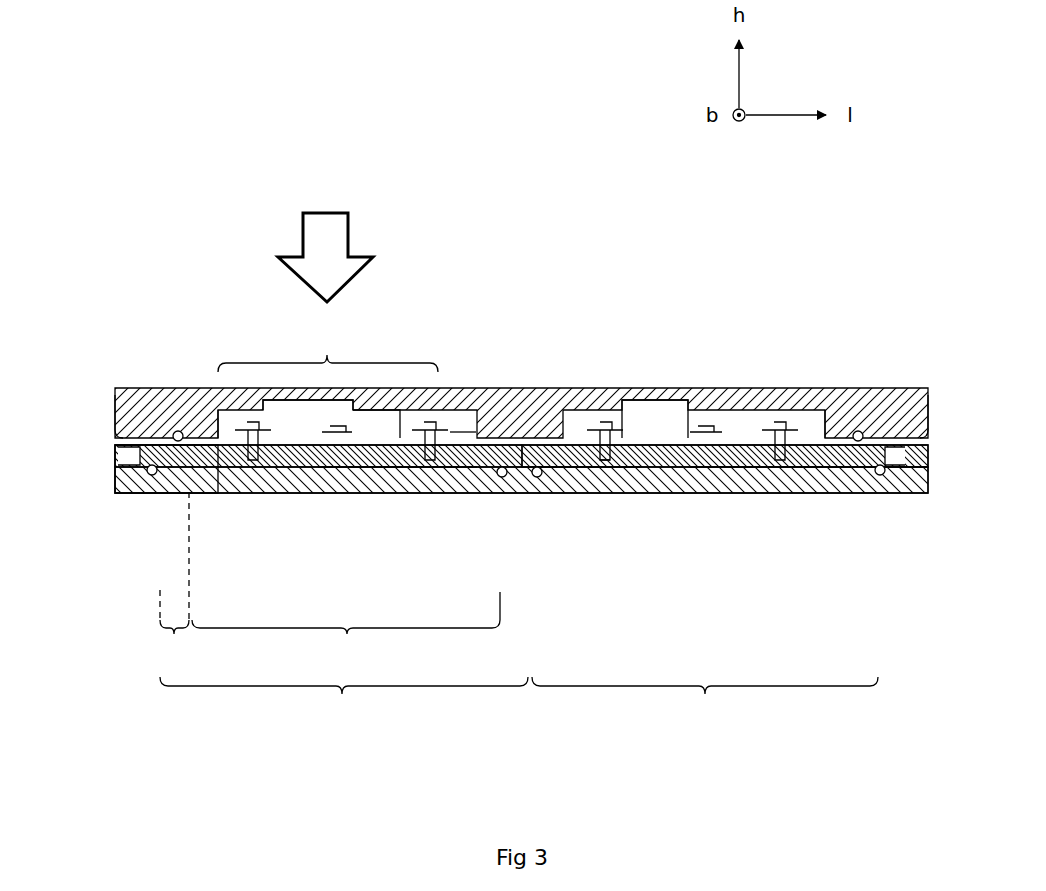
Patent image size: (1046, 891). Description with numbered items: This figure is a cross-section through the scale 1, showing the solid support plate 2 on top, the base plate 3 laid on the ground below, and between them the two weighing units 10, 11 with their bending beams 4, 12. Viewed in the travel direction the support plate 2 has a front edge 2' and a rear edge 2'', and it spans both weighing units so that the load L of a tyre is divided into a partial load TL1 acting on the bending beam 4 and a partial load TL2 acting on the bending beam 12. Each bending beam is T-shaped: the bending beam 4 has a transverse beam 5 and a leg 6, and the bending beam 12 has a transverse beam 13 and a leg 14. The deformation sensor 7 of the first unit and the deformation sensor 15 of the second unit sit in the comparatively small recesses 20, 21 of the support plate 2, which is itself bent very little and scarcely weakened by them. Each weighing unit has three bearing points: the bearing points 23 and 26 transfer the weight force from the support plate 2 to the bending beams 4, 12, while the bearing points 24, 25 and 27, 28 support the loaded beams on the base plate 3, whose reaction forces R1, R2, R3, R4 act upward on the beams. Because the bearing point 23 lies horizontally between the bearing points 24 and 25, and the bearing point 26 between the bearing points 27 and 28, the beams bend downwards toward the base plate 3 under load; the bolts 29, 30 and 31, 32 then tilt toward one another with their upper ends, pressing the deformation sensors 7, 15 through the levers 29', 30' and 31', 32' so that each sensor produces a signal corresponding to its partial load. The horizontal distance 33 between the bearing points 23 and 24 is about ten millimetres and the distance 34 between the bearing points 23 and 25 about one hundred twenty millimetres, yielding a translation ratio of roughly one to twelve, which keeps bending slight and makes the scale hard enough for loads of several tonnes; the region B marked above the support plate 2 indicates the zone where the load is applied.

The scale 1 is at (558, 150).
The support plate 2 is at (521, 340).
The front edge 2' is at (107, 372).
The rear edge 2'' is at (941, 372).
The base plate 3 is at (640, 480).
The bending beam 4 is at (322, 470).
The transverse beam 5 is at (220, 482).
The leg 6 is at (402, 470).
The deformation sensor 7 is at (376, 424).
The weighing unit 10 is at (344, 713).
The further weighing unit 11 is at (705, 708).
The bending beam 12 is at (698, 470).
The transverse beam 13 is at (818, 462).
The leg 14 is at (596, 470).
The deformation sensor 15 is at (655, 424).
The recess 20 is at (288, 408).
The recess 21 is at (702, 406).
The bearing point 23 is at (170, 432).
The bearing point 24 is at (145, 470).
The bearing point 25 is at (484, 460).
The bearing point 26 is at (866, 434).
The bearing point 27 is at (890, 476).
The bearing point 28 is at (550, 460).
The bolt 29 is at (250, 482).
The lever 29' is at (311, 477).
The bolt 30 is at (430, 490).
The lever 30' is at (465, 479).
The bolt 31 is at (602, 390).
The lever 31' is at (623, 396).
The bolt 32 is at (776, 388).
The lever 32' is at (733, 479).
The horizontal distance 33 is at (174, 578).
The distance 34 is at (346, 628).
The loading region B is at (328, 344).
The load L is at (302, 243).
The partial load TL1 is at (192, 412).
The partial load TL2 is at (851, 412).
The reaction force R1 is at (160, 496).
The reaction force R2 is at (500, 496).
The reaction force R3 is at (540, 496).
The reaction force R4 is at (880, 496).